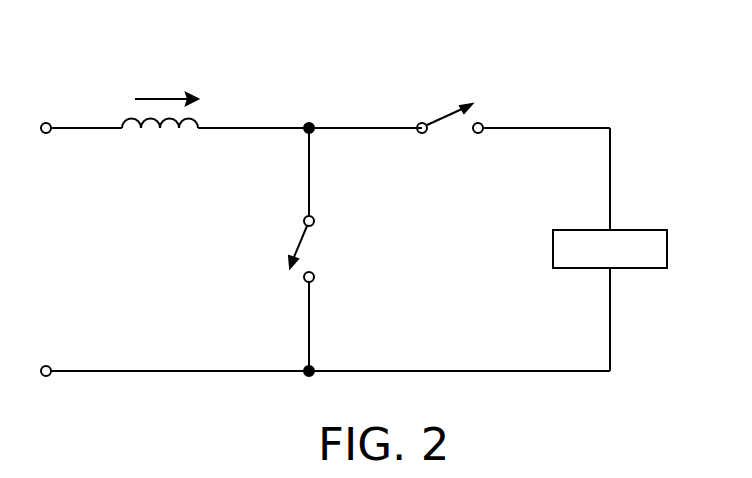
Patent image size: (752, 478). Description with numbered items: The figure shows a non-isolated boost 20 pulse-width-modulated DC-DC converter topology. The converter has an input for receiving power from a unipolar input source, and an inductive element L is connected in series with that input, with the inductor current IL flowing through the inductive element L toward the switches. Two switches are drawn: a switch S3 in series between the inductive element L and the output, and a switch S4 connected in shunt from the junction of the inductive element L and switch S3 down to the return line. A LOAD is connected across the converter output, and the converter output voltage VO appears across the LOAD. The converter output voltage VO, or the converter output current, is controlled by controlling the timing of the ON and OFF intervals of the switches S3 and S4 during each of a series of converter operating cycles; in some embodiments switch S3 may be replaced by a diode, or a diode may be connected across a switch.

The boost converter 20 is at (592, 70).
The inductive element L is at (160, 142).
The switch S3 is at (450, 109).
The switch S4 is at (313, 249).
The inductor current IL is at (166, 87).
The converter output voltage VO is at (688, 248).
The load LOAD is at (610, 249).